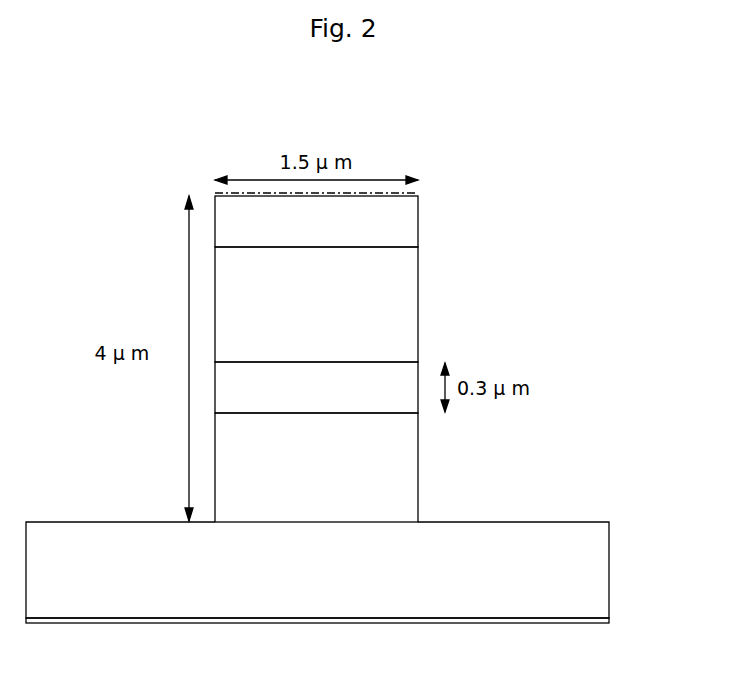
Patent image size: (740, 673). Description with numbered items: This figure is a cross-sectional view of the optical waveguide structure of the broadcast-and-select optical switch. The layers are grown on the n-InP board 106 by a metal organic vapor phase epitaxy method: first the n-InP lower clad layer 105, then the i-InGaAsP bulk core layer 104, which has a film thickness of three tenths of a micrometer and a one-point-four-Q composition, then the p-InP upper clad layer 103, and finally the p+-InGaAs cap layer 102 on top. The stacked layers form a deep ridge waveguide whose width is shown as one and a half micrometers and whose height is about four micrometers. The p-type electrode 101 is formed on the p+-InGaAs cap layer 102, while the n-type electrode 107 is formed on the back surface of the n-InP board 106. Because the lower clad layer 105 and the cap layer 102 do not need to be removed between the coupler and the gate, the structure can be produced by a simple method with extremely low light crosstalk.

The p-type electrode 101 is at (420, 193).
The p+-InGaAs cap layer 102 is at (408, 226).
The p-InP upper clad layer 103 is at (408, 298).
The i-InGaAsP bulk core layer 104 is at (410, 372).
The n-InP lower clad layer 105 is at (408, 478).
The n-InP board 106 is at (600, 579).
The n-type electrode 107 is at (609, 623).